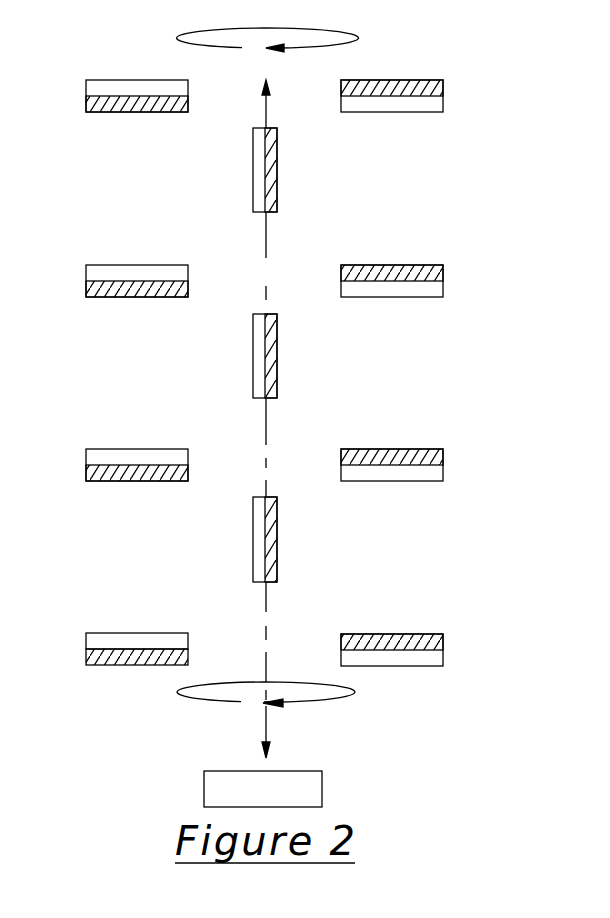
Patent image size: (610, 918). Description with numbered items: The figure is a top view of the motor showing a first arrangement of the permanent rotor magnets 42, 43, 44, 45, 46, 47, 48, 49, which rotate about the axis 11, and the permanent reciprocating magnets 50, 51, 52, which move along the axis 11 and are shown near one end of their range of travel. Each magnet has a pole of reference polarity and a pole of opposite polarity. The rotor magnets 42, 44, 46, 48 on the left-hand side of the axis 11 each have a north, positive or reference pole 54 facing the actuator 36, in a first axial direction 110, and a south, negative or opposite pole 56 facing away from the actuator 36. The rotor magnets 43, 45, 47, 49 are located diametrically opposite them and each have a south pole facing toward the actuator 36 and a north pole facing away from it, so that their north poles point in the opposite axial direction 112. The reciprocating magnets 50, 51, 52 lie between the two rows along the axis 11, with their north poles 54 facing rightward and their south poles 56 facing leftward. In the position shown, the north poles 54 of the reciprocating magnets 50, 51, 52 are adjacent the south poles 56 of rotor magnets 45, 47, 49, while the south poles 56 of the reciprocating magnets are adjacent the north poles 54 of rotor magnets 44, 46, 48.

The axis 11 is at (268, 108).
The actuator 36 is at (322, 789).
The rotor magnet 42 is at (105, 634).
The rotor magnet 43 is at (430, 636).
The rotor magnet 44 is at (98, 454).
The rotor magnet 45 is at (430, 451).
The rotor magnet 46 is at (98, 270).
The rotor magnet 47 is at (430, 267).
The rotor magnet 48 is at (98, 85).
The rotor magnet 49 is at (430, 82).
The reciprocating magnet 50 is at (272, 582).
The reciprocating magnet 51 is at (272, 398).
The reciprocating magnet 52 is at (272, 212).
The north pole 54 is at (96, 660).
The south pole 56 is at (150, 641).
The first axial direction 110 is at (262, 750).
The opposite axial direction 112 is at (263, 87).